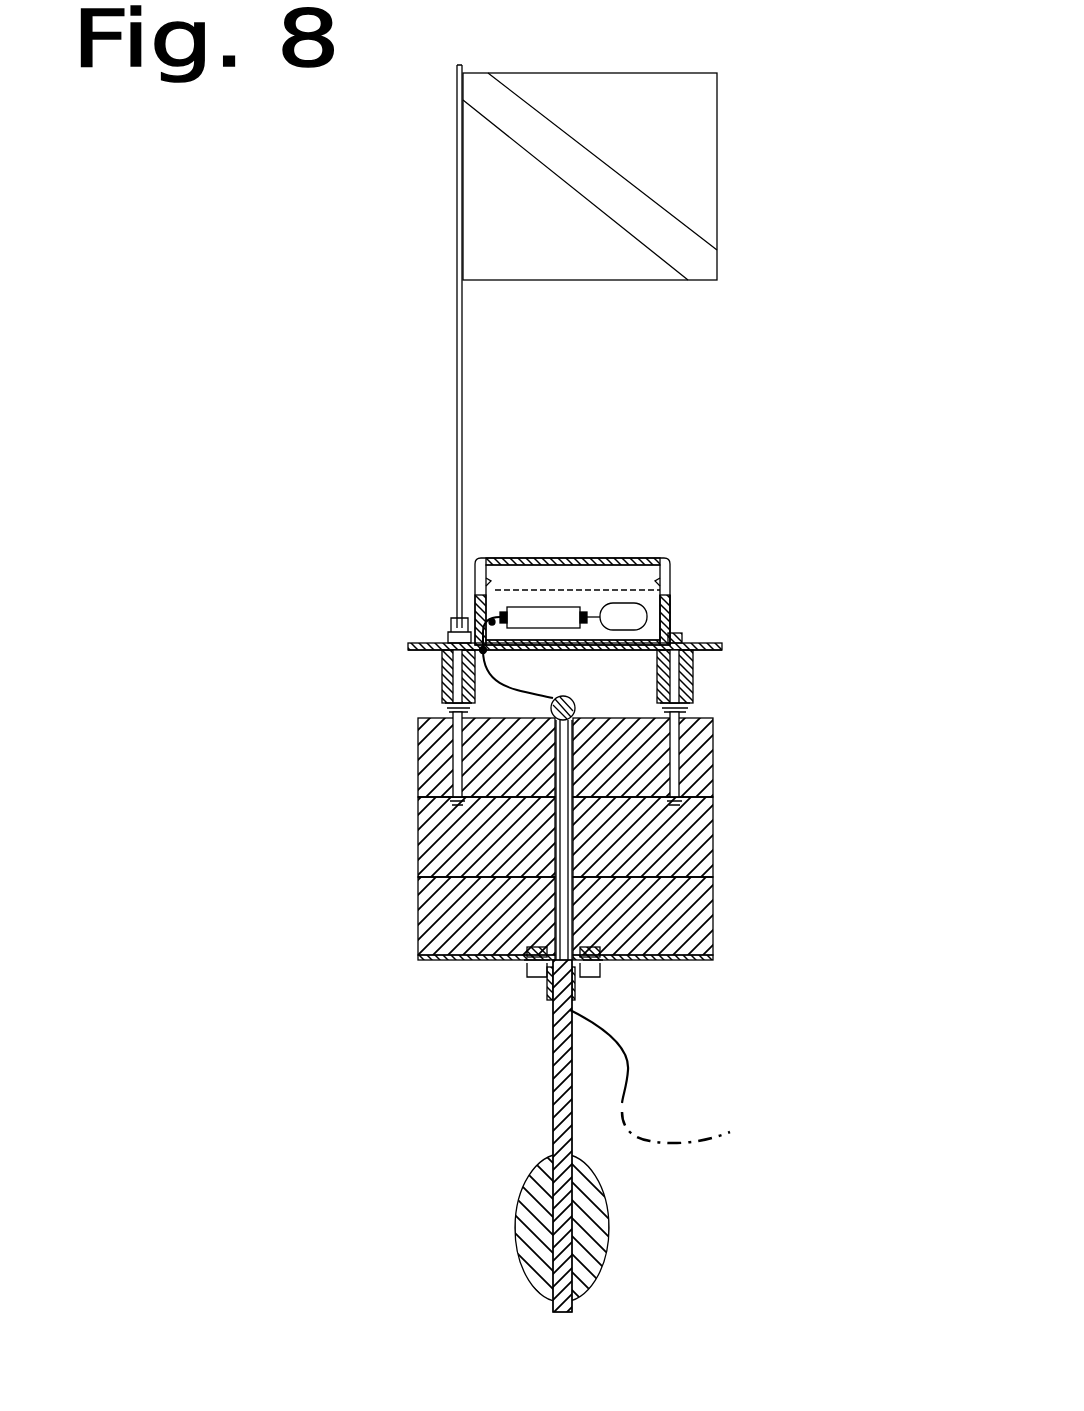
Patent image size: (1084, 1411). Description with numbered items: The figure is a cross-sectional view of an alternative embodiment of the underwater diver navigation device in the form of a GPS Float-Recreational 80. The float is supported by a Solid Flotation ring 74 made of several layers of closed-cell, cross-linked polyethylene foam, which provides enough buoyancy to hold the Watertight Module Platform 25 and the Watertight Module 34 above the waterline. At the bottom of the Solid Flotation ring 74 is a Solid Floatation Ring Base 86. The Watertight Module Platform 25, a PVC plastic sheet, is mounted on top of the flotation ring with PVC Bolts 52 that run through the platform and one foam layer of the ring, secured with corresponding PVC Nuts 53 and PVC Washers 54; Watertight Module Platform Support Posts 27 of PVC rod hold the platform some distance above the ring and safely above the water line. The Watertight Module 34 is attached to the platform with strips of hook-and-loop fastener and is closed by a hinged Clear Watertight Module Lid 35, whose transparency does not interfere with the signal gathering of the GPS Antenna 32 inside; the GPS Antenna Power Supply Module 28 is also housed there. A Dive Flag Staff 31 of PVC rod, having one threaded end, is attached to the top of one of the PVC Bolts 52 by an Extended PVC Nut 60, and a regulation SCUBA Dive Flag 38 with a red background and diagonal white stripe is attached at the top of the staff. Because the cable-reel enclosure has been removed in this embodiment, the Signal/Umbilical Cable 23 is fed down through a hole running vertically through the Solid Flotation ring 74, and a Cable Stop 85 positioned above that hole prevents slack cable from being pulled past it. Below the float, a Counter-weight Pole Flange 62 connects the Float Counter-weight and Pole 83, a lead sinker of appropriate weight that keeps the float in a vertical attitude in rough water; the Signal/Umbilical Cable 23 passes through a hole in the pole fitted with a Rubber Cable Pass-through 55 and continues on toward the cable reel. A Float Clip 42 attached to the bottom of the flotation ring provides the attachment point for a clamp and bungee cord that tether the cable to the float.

The GPS Float-Recreational 80 is at (250, 820).
The SCUBA Dive Flag 38 is at (719, 192).
The Dive Flag Staff 31 is at (457, 388).
The Extended PVC Nut 60 is at (451, 621).
The Clear Watertight Module Lid 35 is at (655, 557).
The Watertight Module 34 is at (683, 631).
The GPS Antenna Power Supply Module 28 is at (532, 607).
The GPS Antenna 32 is at (620, 603).
The Rubber Cable Pass-through 55 is at (472, 592).
The PVC Nut 53 is at (682, 633).
The Watertight Module Platform 25 is at (422, 647).
The PVC Washer 54 is at (683, 647).
The Watertight Module Platform Support Post 27 is at (443, 668).
The Solid Flotation Ring 74 is at (713, 890).
The Solid Floatation Ring Base 86 is at (713, 955).
The PVC Bolt 52 is at (675, 768).
The Cable Stop 85 is at (575, 708).
The Float Clip 42 is at (600, 995).
The Counter-weight Pole Flange 62 is at (547, 990).
The Float Counter-weight and Pole 83 is at (515, 1227).
The Signal/Umbilical Cable 23 is at (605, 1037).